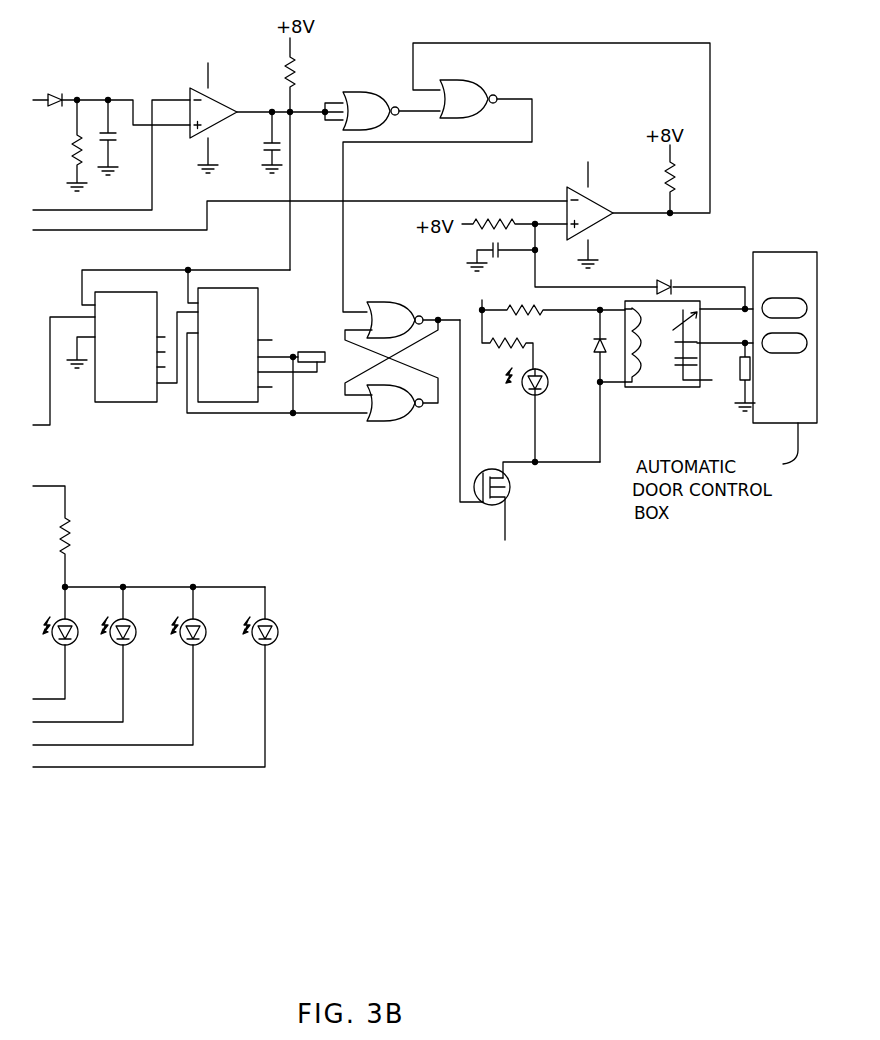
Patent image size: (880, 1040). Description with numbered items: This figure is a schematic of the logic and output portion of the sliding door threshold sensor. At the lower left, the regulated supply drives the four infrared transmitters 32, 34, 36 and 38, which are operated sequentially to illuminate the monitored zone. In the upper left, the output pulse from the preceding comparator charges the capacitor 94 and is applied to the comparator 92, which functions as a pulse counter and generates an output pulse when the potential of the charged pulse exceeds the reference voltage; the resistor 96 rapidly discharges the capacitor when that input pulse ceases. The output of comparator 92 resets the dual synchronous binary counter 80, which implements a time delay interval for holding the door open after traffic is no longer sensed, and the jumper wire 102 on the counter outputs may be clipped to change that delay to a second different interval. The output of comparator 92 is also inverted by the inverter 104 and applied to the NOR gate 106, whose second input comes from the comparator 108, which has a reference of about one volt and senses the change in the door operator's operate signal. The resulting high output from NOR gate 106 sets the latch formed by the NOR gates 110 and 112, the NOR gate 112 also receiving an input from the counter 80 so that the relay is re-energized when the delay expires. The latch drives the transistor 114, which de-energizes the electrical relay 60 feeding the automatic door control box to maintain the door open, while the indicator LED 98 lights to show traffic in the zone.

The infrared transmitter 32 is at (74, 642).
The infrared transmitter 34 is at (132, 642).
The infrared transmitter 36 is at (202, 642).
The infrared transmitter 38 is at (274, 642).
The electrical relay 60 is at (672, 388).
The dual synchronous binary counter 80 is at (176, 400).
The comparator 92 is at (224, 88).
The capacitor 94 is at (112, 140).
The resistor 96 is at (74, 156).
The indicator LED 98 is at (546, 392).
The jumper wire 102 is at (314, 351).
The inverter 104 is at (357, 70).
The NOR gate 106 is at (487, 82).
The comparator 108 is at (598, 197).
The NOR gate 110 is at (400, 302).
The NOR gate 112 is at (400, 421).
The transistor 114 is at (511, 488).